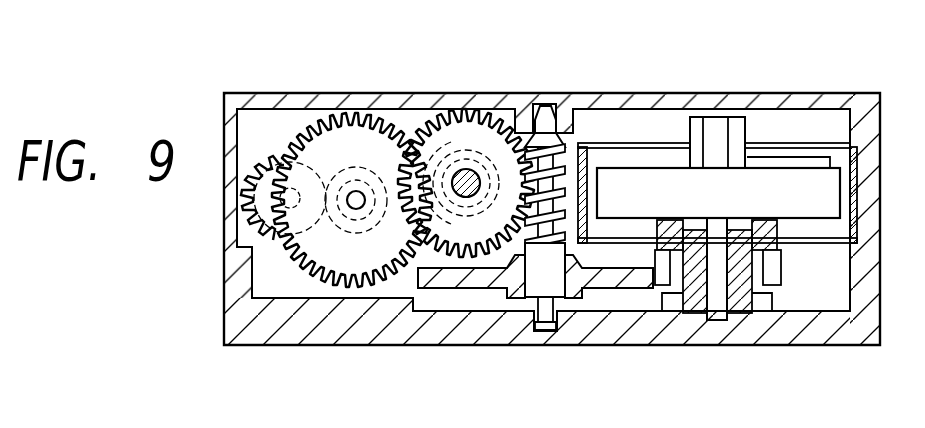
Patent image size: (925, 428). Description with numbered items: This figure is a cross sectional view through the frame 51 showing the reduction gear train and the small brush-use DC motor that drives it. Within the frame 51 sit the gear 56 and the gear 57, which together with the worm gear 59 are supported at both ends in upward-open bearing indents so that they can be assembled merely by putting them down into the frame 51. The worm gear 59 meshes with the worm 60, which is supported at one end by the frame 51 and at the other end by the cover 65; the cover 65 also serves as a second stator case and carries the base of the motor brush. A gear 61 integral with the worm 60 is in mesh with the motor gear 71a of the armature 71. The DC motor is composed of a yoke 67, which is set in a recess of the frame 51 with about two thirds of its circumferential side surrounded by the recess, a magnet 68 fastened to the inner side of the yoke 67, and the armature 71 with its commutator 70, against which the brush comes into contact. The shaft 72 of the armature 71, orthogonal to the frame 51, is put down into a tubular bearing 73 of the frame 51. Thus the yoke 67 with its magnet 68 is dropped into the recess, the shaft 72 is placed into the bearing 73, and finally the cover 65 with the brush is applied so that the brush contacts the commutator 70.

The frame 51 is at (570, 331).
The gear 56 is at (268, 190).
The gear 57 is at (357, 133).
The worm gear 59 is at (449, 150).
The worm 60 is at (565, 162).
The gear 61 is at (458, 280).
The cover 65 is at (812, 101).
The yoke 67 is at (836, 160).
The magnet 68 is at (767, 157).
The commutator 70 is at (718, 123).
The armature 71 is at (817, 207).
The motor gear 71a is at (777, 285).
The shaft 72 is at (722, 320).
The tubular bearing 73 is at (673, 313).